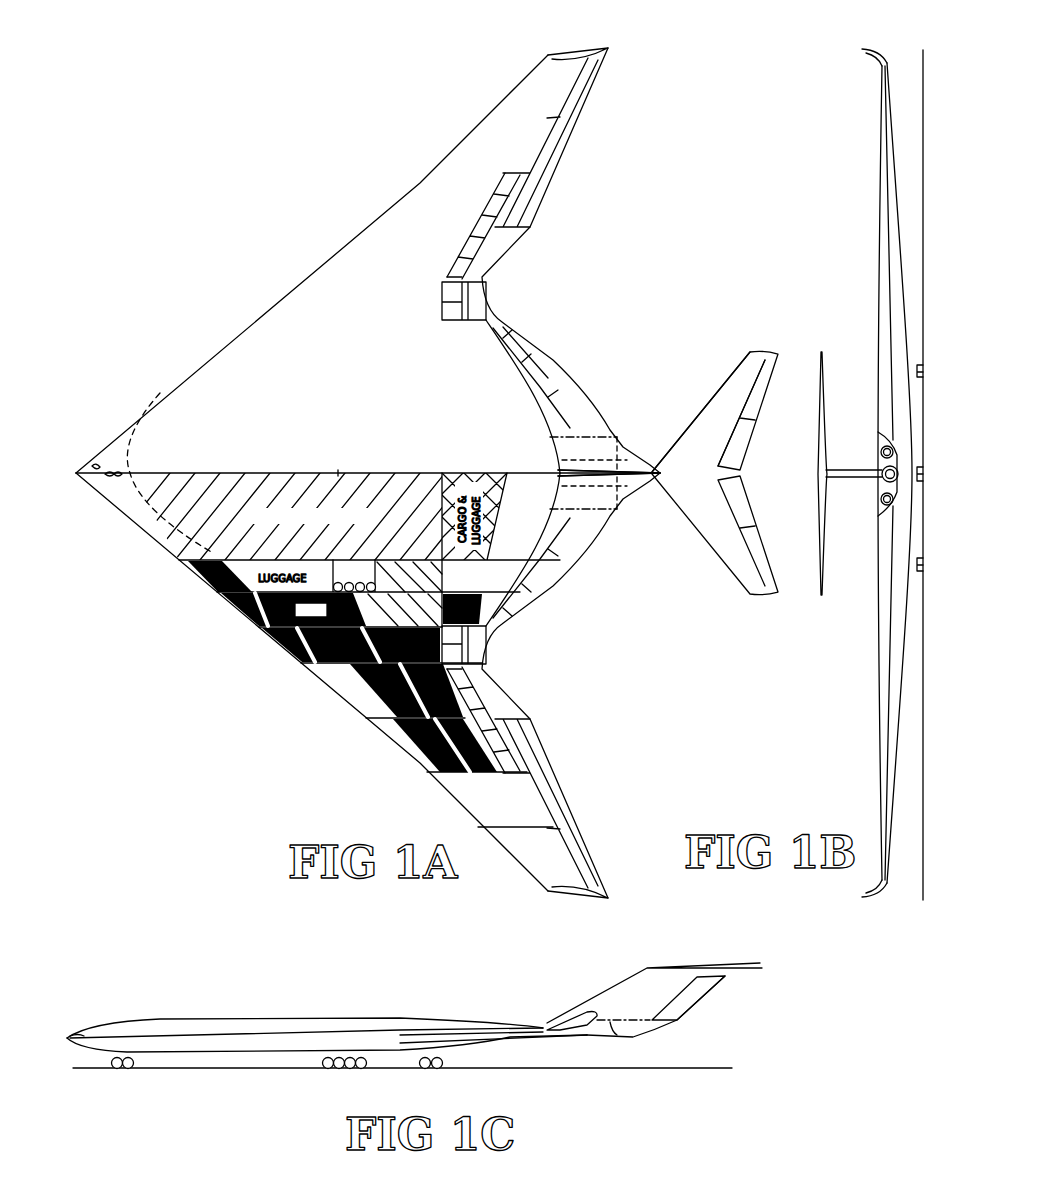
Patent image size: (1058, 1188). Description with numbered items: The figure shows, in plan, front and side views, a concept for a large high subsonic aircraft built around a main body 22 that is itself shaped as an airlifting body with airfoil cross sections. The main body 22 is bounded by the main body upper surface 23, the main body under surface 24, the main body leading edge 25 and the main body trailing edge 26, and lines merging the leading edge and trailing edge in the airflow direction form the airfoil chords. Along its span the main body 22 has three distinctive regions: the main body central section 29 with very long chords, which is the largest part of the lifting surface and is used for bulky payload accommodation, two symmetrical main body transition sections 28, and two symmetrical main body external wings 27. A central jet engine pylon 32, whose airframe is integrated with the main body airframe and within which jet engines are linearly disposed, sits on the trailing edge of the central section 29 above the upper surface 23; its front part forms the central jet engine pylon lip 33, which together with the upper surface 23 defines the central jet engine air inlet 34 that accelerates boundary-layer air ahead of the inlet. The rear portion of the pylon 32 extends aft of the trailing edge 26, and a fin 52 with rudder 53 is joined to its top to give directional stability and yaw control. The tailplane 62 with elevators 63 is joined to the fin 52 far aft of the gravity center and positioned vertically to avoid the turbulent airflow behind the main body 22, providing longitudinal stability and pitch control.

In FIG. 1C, the main body 22 is at (160, 1025).
In FIG. 1B, the main body upper surface 23 is at (878, 368).
In FIG. 1C, the main body under surface 24 is at (510, 1038).
In FIG. 1A, the main body leading edge 25 is at (228, 350).
In FIG. 1A, the main body trailing edge 26 is at (553, 360).
In FIG. 1A, the main body external wings 27 is at (373, 685).
In FIG. 1A, the main body transition sections 28 is at (337, 642).
In FIG. 1A, the main body central section 29 is at (170, 505).
In FIG. 1A, the central jet engine pylon 32 is at (610, 467).
In FIG. 1A, the central jet engine pylon lip 33 is at (563, 497).
In FIG. 1C, the central jet engine air inlet 34 is at (552, 1022).
In FIG. 1C, the fin 52 is at (625, 988).
In FIG. 1C, the rudder 53 is at (683, 1000).
In FIG. 1A, the tailplane 62 is at (712, 405).
In FIG. 1A, the elevators 63 is at (738, 445).